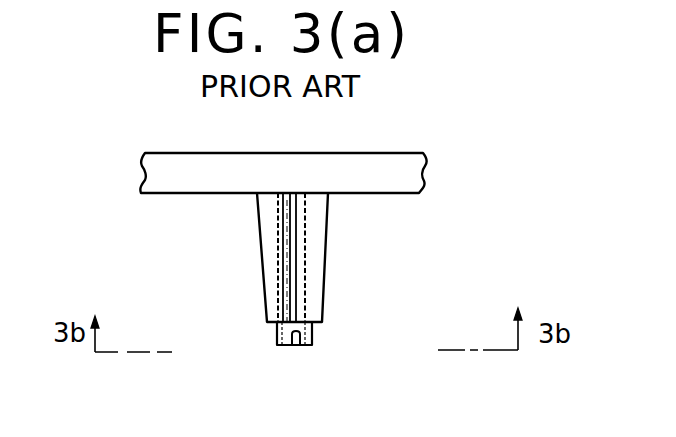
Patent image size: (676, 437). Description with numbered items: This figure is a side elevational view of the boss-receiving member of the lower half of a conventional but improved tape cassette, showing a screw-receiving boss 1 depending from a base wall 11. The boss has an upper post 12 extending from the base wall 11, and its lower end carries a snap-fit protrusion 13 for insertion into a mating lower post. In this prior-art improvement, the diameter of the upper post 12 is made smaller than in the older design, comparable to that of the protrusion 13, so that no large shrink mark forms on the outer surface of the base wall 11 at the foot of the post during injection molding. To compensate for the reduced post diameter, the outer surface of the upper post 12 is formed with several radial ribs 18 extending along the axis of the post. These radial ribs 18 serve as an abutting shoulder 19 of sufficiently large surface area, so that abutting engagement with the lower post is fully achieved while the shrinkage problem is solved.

The screw-receiving boss 1 is at (331, 293).
The base wall 11 is at (387, 165).
The upper post 12 is at (303, 233).
The snap-fit protrusion 13 is at (312, 340).
The radial ribs 18 is at (314, 212).
The abutting shoulder 19 is at (316, 323).